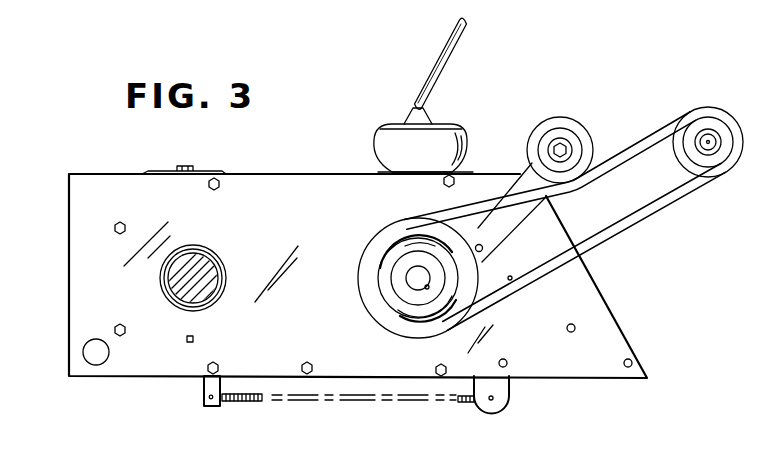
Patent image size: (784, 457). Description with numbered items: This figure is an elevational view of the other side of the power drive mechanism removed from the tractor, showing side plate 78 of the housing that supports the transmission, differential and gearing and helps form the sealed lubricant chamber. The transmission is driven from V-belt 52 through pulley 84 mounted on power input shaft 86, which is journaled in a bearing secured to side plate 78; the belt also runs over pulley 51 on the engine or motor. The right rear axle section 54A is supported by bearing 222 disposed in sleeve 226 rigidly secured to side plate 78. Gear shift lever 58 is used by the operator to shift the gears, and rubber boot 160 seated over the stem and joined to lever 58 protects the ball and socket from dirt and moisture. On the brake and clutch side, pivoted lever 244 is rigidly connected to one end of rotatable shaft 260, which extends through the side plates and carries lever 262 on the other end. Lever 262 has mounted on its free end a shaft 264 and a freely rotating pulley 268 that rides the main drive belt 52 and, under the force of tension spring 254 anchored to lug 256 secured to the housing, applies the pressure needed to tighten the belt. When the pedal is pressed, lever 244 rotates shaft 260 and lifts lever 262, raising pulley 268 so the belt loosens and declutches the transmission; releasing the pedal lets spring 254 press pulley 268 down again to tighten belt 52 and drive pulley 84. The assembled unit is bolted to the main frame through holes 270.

The pulley 51 is at (742, 96).
The V-belt 52 is at (640, 215).
The right rear axle section 54A is at (212, 272).
The gear shift lever 58 is at (445, 48).
The side plate 78 is at (69, 285).
The pulley 84 is at (365, 284).
The power input shaft 86 is at (418, 278).
The rubber boot 160 is at (380, 148).
The bearing 222 is at (172, 295).
The sleeve 226 is at (163, 284).
The pivoted lever 244 is at (506, 399).
The tension spring 254 is at (395, 400).
The lug 256 is at (205, 395).
The rotatable shaft 260 is at (483, 248).
The lever 262 is at (517, 182).
The shaft 264 is at (566, 150).
The pulley 268 is at (547, 118).
The holes 270 is at (575, 328).